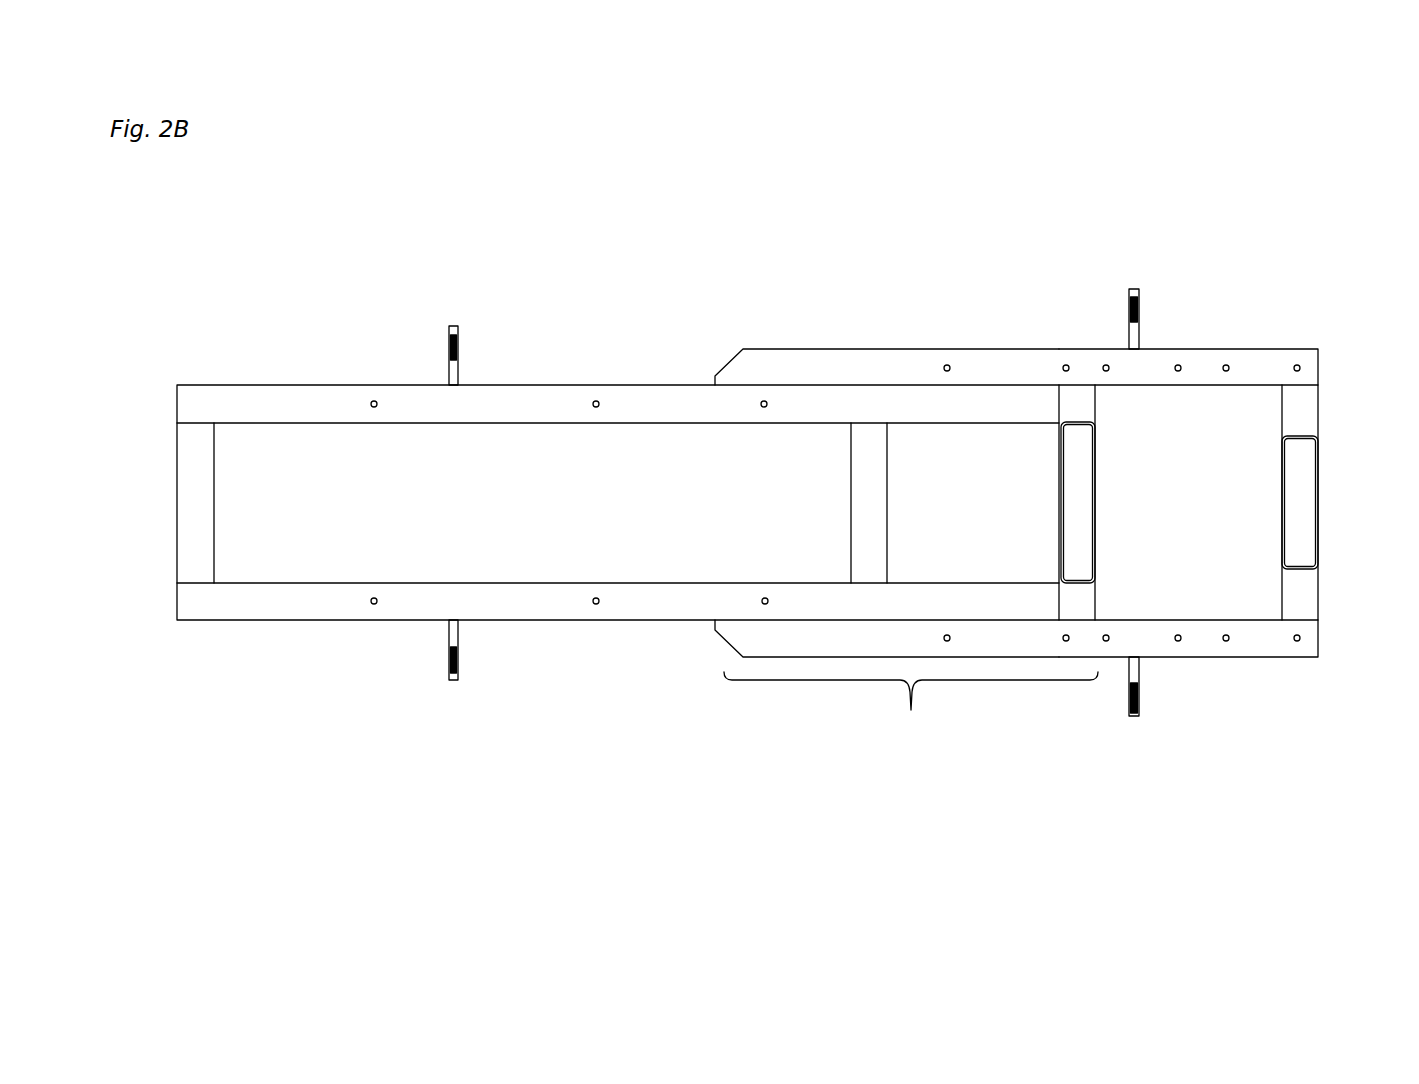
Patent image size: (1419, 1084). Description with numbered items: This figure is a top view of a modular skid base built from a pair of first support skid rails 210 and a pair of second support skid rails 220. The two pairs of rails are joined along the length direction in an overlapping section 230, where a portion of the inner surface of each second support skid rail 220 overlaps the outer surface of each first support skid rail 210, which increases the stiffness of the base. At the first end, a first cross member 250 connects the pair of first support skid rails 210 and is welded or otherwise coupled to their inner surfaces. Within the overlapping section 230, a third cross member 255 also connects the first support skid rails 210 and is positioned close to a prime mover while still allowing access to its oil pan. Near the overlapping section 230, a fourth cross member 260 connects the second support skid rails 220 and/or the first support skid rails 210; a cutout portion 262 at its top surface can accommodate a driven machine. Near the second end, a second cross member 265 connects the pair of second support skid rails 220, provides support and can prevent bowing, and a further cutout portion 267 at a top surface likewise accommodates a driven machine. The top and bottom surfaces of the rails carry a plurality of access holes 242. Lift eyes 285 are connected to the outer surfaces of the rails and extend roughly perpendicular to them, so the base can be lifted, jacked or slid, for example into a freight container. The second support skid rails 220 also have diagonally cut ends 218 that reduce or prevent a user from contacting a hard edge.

The first support skid rails 210 is at (280, 393).
The diagonally cut ends 218 is at (730, 357).
The second support skid rails 220 is at (1198, 360).
The overlapping section 230 is at (908, 708).
The access holes 242 is at (374, 401).
The first cross member 250 is at (194, 491).
The third cross member 255 is at (868, 440).
The fourth cross member 260 is at (1083, 405).
The cutout portion 262 is at (1095, 472).
The second cross member 265 is at (1305, 413).
The cutout portion 267 is at (1319, 473).
The lift eyes 285 is at (448, 327).